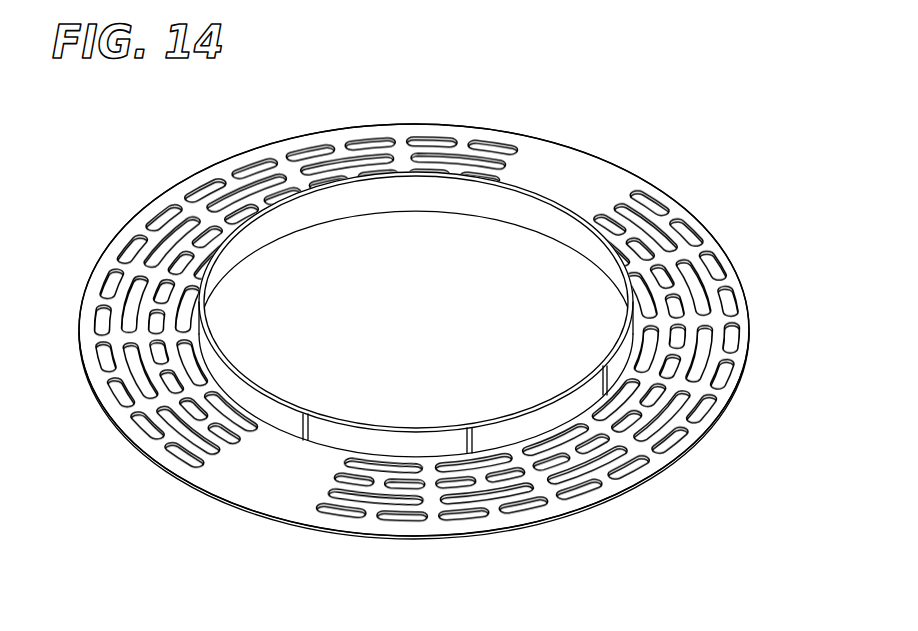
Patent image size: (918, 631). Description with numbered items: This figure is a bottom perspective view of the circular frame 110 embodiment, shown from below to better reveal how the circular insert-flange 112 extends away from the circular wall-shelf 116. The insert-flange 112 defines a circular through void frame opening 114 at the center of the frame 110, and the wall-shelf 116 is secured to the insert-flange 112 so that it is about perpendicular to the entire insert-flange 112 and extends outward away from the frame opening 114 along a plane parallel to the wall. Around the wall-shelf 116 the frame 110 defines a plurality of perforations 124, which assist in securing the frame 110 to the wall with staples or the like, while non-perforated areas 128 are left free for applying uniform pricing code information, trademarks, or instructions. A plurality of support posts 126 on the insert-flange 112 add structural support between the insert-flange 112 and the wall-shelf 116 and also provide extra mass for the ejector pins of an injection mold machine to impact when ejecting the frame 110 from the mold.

The circular frame 110 is at (673, 127).
The circular insert-flange 112 is at (457, 196).
The circular through void frame opening 114 is at (424, 320).
The circular wall-shelf 116 is at (710, 248).
The perforations 124 is at (366, 133).
The support posts 126 is at (428, 431).
The non-perforated areas 128 is at (607, 185).